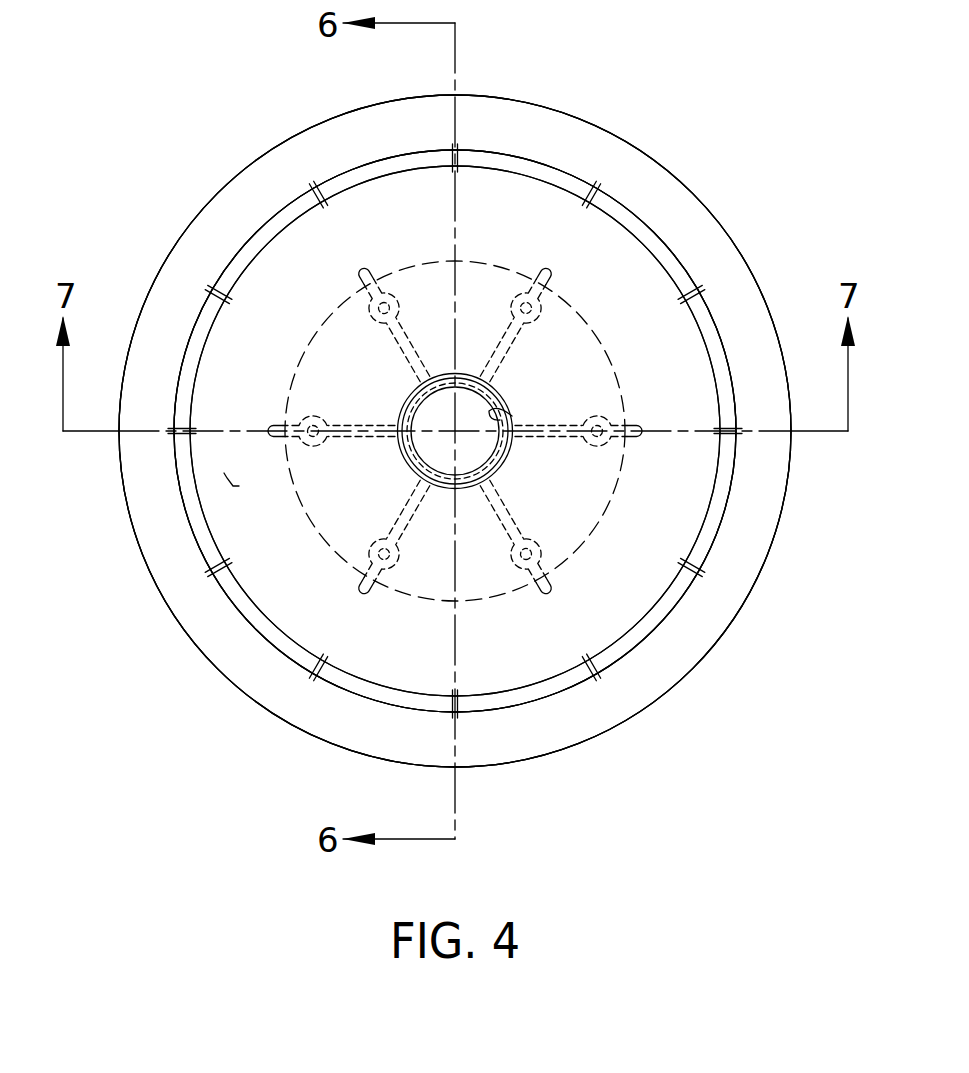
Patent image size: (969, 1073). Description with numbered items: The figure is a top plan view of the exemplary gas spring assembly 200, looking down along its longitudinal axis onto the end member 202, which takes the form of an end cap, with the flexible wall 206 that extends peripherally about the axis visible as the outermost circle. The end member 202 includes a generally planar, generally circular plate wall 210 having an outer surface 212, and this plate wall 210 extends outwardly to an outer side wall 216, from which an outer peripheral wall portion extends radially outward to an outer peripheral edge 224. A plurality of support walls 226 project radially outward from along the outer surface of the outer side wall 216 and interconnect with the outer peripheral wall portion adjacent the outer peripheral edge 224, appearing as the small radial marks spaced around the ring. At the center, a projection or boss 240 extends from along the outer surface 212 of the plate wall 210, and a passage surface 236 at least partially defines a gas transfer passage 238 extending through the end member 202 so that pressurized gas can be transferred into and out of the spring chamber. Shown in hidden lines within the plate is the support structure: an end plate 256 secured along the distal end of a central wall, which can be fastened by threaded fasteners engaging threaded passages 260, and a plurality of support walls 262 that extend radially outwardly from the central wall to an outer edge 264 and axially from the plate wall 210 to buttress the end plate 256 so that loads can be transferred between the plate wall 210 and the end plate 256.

The gas spring assembly 200 is at (752, 180).
The end member 202 is at (287, 270).
The flexible wall 206 is at (505, 97).
The plate wall 210 is at (618, 255).
The outer surface 212 is at (227, 478).
The outer side wall 216 is at (627, 637).
The outer peripheral edge 224 is at (733, 482).
The support walls 226 is at (314, 180).
The passage surface 236 is at (512, 416).
The gas transfer passage 238 is at (465, 450).
The projection or boss 240 is at (513, 452).
The end plate 256 is at (485, 602).
The threaded passages 260 is at (363, 586).
The support walls 262 is at (395, 340).
The outer edge 264 is at (546, 268).